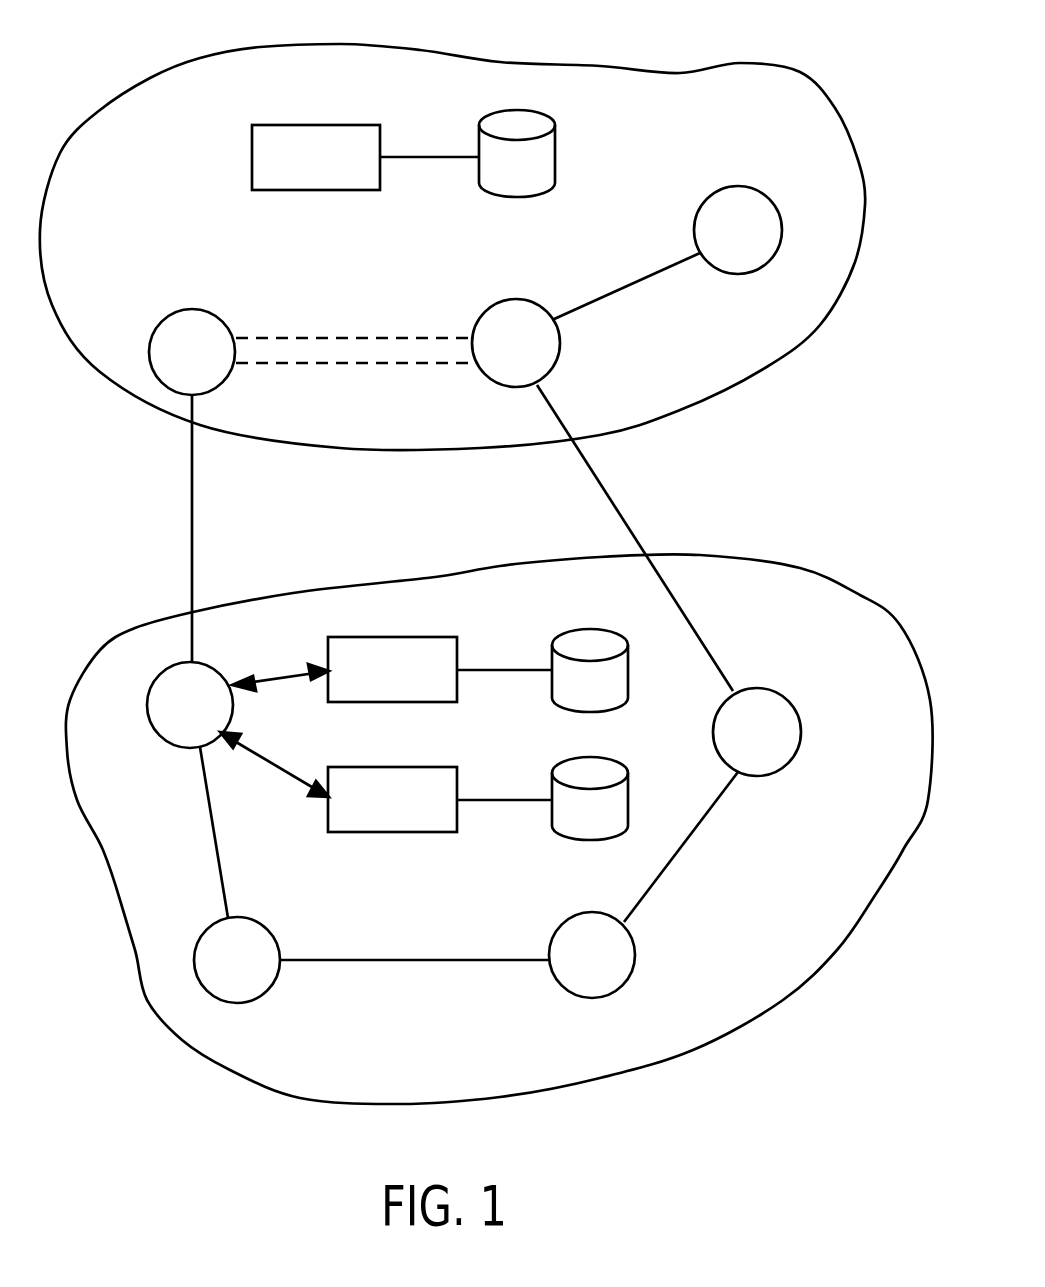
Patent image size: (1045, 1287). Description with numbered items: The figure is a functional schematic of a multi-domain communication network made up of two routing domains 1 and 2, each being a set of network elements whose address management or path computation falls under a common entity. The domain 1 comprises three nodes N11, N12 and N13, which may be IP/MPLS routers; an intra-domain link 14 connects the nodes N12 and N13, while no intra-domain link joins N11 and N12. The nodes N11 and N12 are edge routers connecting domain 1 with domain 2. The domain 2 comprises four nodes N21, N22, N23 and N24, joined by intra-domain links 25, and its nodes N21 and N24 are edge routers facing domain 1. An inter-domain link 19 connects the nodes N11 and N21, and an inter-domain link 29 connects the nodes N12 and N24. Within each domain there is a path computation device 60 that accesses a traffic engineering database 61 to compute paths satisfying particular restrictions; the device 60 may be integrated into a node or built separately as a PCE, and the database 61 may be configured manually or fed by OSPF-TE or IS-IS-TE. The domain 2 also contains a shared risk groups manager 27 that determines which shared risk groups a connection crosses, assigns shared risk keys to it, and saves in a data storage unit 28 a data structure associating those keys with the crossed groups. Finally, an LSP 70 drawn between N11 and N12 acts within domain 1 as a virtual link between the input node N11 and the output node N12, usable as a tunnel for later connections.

The routing domain 1 is at (130, 82).
The routing domain 2 is at (172, 1042).
The path computation device 60 is at (318, 125).
The traffic engineering database 61 is at (517, 110).
The intra-domain link 14 is at (624, 285).
The inter-domain link 19 is at (195, 528).
The inter-domain link 29 is at (618, 507).
The LSP 70 is at (356, 338).
The intra-domain links 25 is at (207, 838).
The shared risk groups manager 27 is at (390, 833).
The data storage unit 28 is at (592, 842).
The node N11 is at (194, 309).
The node N12 is at (558, 347).
The node N13 is at (735, 187).
The node N21 is at (147, 710).
The node N22 is at (240, 1003).
The node N23 is at (592, 998).
The node N24 is at (757, 689).